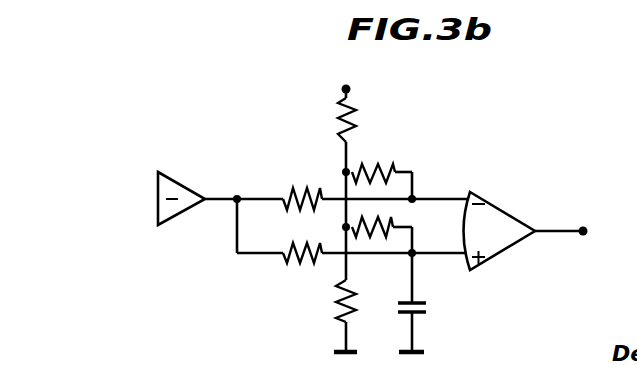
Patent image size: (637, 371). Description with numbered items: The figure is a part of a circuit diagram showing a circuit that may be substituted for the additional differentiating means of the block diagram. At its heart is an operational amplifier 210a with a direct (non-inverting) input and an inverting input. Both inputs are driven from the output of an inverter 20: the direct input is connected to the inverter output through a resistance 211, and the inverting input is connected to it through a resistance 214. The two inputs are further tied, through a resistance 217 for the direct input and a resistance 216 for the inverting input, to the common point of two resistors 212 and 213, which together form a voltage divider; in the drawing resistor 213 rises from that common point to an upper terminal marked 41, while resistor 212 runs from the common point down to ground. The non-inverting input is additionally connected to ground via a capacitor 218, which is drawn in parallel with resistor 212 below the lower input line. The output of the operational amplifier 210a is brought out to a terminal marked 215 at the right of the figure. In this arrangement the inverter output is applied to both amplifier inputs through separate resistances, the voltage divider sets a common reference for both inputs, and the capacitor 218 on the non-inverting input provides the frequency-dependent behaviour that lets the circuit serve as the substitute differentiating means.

The inverter 20 is at (158, 207).
The input terminal 41 is at (349, 88).
The operational amplifier 210a is at (507, 222).
The resistance 211 is at (290, 264).
The resistor 212 is at (338, 298).
The resistor 213 is at (342, 111).
The resistance 214 is at (299, 190).
The output terminal 215 is at (585, 227).
The resistance 216 is at (388, 166).
The resistance 217 is at (384, 221).
The capacitor 218 is at (424, 311).